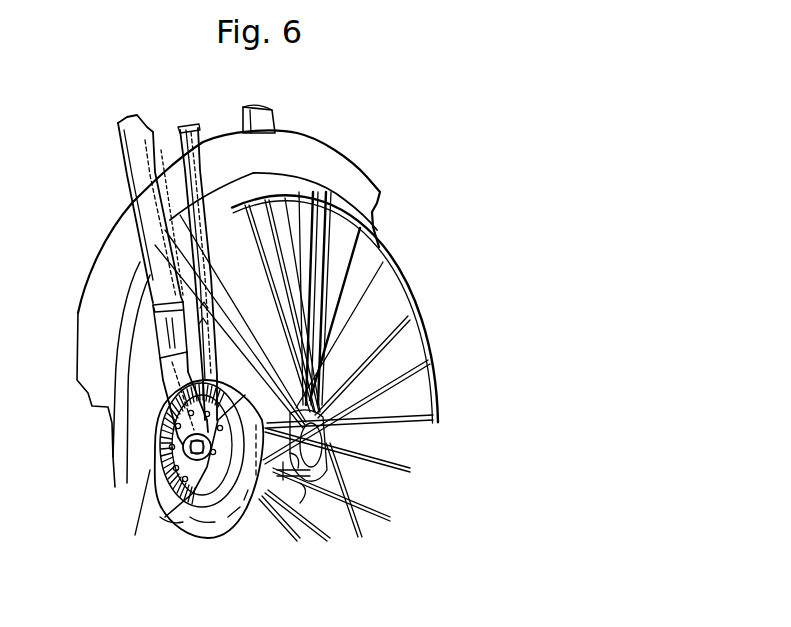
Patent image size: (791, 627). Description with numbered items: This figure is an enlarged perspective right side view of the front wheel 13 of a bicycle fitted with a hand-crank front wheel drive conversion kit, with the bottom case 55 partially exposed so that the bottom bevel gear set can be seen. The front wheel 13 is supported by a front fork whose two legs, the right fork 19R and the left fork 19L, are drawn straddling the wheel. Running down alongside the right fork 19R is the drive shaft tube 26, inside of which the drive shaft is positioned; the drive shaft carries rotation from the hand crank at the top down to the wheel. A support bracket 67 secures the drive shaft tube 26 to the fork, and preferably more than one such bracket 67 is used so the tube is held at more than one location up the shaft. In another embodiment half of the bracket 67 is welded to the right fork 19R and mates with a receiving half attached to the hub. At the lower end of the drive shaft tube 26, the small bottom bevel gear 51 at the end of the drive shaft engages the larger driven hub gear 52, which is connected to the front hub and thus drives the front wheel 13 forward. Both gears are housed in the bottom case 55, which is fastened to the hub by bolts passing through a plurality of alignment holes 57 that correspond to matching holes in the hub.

The front wheel 13 is at (360, 187).
The right fork 19R is at (118, 142).
The left fork 19L is at (277, 120).
The drive shaft tube 26 is at (200, 132).
The support bracket 67 is at (160, 337).
The bottom bevel gear 51 is at (227, 392).
The hub gear 52 is at (152, 478).
The bottom case 55 is at (227, 527).
The alignment holes 57 is at (165, 515).